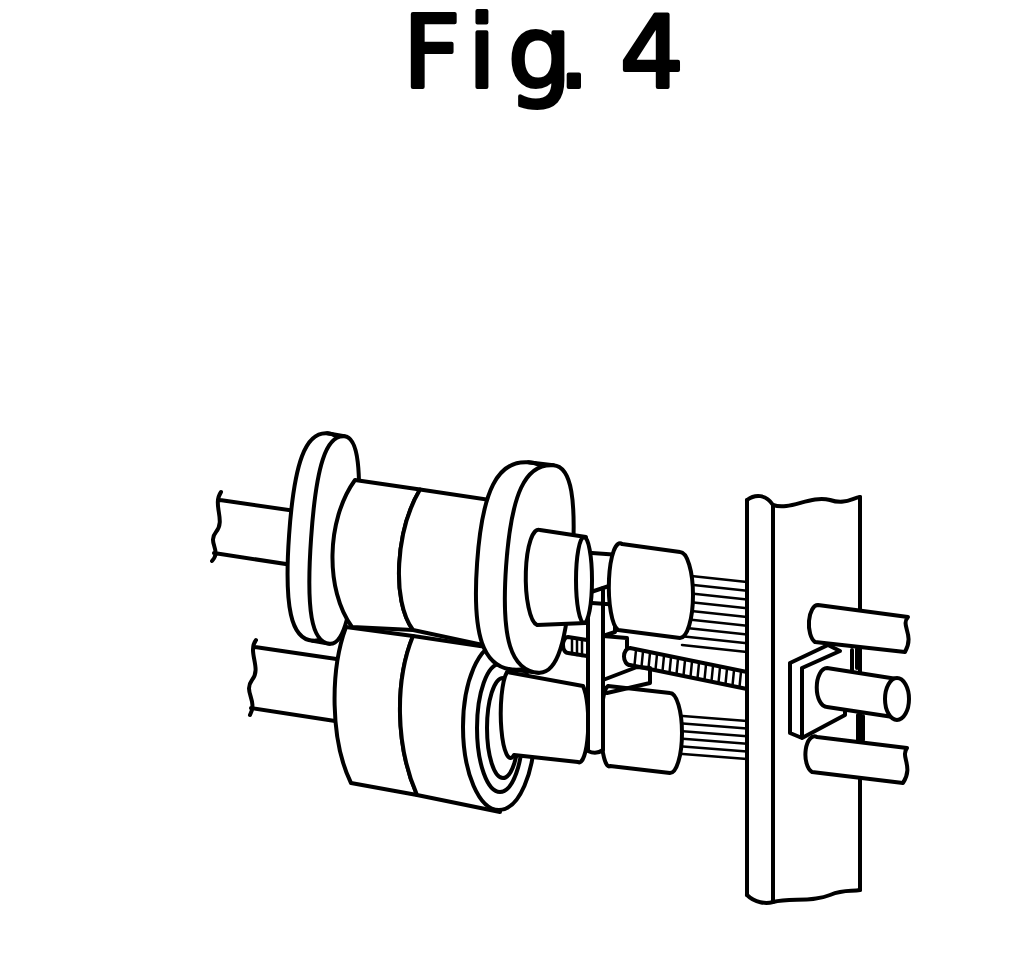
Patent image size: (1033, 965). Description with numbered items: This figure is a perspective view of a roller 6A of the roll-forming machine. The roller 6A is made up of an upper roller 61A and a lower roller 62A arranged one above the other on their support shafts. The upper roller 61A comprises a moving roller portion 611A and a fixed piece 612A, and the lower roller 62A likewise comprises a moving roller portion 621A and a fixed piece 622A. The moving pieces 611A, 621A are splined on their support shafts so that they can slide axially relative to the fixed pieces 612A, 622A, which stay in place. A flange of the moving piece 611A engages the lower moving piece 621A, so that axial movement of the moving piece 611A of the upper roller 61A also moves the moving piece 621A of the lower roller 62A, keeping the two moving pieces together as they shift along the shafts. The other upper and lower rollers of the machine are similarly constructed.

The roller 6A is at (413, 608).
The upper roller 61A is at (356, 462).
The moving roller portion 611A is at (462, 512).
The fixed piece 612A is at (395, 497).
The lower roller 62A is at (428, 796).
The moving roller portion 621A is at (441, 785).
The fixed piece 622A is at (352, 783).